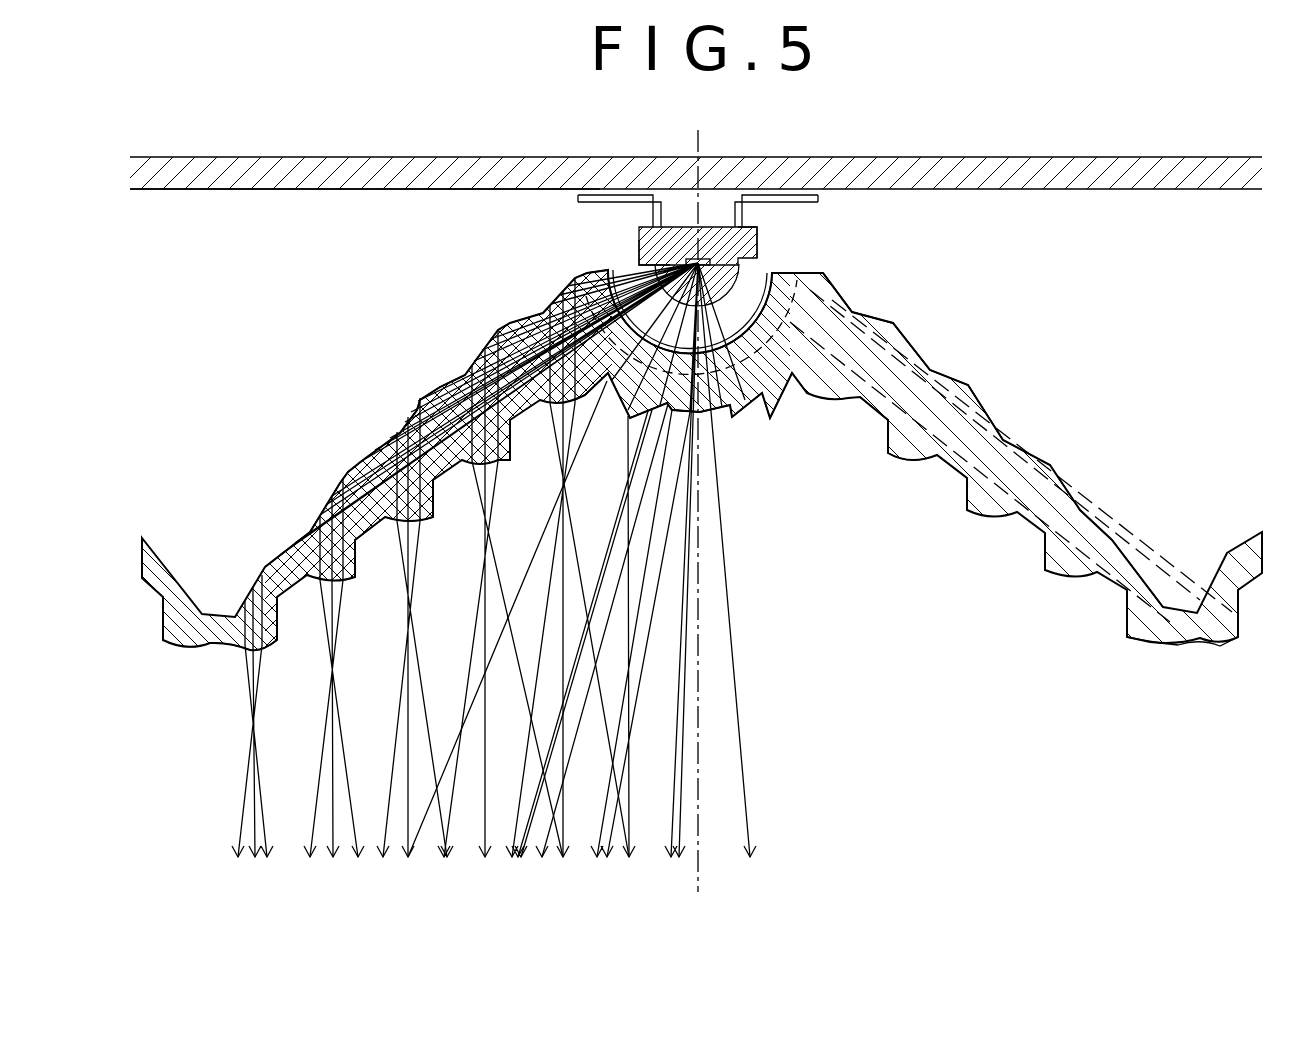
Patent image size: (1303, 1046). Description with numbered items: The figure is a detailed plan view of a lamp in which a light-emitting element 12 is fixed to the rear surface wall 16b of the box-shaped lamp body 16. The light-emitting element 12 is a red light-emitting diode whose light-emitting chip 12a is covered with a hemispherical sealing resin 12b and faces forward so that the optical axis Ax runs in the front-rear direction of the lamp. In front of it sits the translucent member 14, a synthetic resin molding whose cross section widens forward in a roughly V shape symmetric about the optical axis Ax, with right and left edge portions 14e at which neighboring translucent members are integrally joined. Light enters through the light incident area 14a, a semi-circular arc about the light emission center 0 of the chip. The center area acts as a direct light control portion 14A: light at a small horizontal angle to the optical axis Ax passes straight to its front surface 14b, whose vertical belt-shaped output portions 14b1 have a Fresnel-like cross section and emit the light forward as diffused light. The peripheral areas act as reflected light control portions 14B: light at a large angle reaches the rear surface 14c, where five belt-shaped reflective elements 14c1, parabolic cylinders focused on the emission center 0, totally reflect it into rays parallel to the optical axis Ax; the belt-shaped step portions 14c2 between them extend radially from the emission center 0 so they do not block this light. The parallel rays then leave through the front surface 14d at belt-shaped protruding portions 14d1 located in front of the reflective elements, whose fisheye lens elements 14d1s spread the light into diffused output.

The light emission center 0 is at (697, 255).
The light-emitting element 12 is at (622, 232).
The light-emitting chip 12a is at (760, 236).
The sealing resin 12b is at (638, 258).
The translucent member 14 is at (992, 557).
The direct light control portion 14A is at (711, 414).
The reflected light control portion 14B is at (358, 462).
The light incident area 14a is at (733, 312).
The front surface of the direct light control portion 14b is at (721, 426).
The belt-shaped output portion 14b1 is at (648, 412).
The rear surface of the reflected light control portion 14c is at (965, 384).
The belt-shaped reflective element 14c1 is at (400, 436).
The belt-shaped step portion 14c2 is at (440, 385).
The front surface of the reflected light control portion 14d is at (913, 481).
The belt-shaped protruding portion 14d1 is at (433, 500).
The lens element 14d1s is at (403, 523).
The right and left edge portion 14e is at (218, 645).
The lamp body 16 is at (1100, 193).
The rear surface wall 16b is at (290, 190).
The optical axis Ax is at (712, 750).